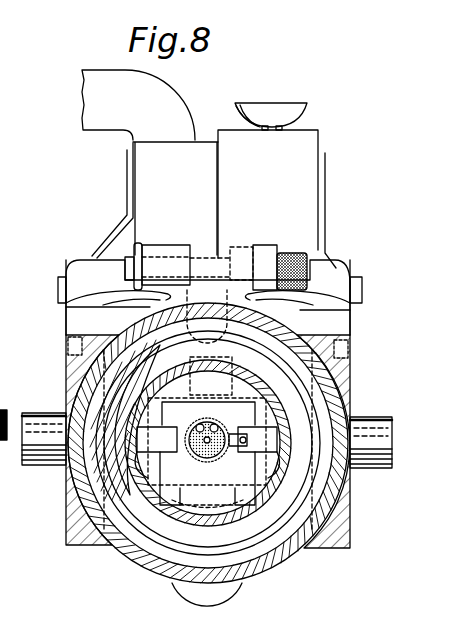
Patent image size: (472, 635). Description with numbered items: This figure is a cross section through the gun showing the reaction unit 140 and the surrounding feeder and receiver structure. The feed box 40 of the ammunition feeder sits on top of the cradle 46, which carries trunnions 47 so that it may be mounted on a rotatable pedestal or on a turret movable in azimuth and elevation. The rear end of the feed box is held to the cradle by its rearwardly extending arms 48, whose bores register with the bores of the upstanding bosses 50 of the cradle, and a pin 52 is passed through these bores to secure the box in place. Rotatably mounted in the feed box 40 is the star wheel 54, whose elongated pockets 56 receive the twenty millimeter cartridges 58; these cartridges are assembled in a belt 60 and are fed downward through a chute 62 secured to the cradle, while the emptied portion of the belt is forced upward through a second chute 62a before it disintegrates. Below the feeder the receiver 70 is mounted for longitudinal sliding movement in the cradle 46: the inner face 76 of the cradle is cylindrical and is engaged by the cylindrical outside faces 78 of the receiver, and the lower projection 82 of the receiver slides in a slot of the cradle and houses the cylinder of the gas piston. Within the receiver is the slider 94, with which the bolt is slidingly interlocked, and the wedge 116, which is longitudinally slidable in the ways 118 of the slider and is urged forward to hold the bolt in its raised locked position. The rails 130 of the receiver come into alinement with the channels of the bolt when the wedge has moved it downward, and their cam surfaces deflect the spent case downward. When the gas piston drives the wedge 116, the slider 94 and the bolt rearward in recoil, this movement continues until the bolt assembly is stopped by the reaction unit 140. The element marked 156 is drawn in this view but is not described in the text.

The feed box 40 is at (350, 326).
The cradle 46 is at (350, 400).
The trunnions 47 is at (378, 480).
The rearwardly extending arms 48 is at (155, 247).
The upstanding bosses 50 is at (175, 250).
The pin 52 is at (290, 254).
The star wheel 54 is at (258, 246).
The elongated pockets 56 is at (235, 367).
The cartridges 58 is at (305, 110).
The belt 60 is at (232, 114).
The chute 62 is at (313, 148).
The chute 62a is at (138, 170).
The receiver 70 is at (242, 560).
The inner face 76 is at (133, 547).
The cylindrical outside faces 78 is at (272, 558).
The lower projection 82 is at (200, 605).
The slider 94 is at (246, 483).
The wedge 116 is at (168, 503).
The ways 118 is at (205, 520).
The rails 130 is at (200, 451).
The reaction unit 140 is at (300, 493).
The baffle 156 is at (243, 127).